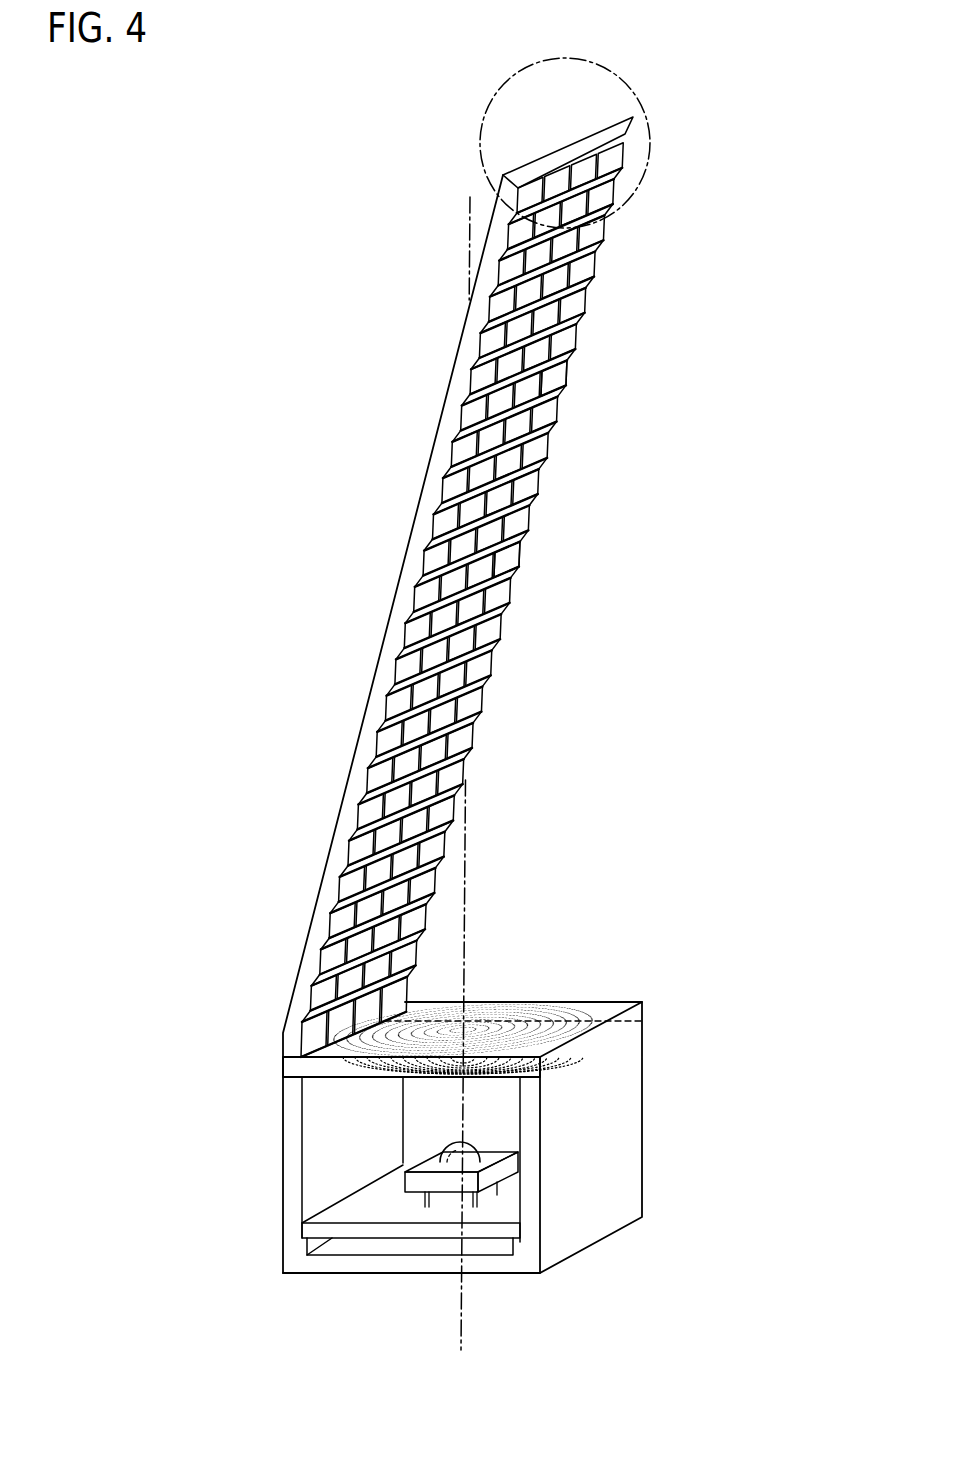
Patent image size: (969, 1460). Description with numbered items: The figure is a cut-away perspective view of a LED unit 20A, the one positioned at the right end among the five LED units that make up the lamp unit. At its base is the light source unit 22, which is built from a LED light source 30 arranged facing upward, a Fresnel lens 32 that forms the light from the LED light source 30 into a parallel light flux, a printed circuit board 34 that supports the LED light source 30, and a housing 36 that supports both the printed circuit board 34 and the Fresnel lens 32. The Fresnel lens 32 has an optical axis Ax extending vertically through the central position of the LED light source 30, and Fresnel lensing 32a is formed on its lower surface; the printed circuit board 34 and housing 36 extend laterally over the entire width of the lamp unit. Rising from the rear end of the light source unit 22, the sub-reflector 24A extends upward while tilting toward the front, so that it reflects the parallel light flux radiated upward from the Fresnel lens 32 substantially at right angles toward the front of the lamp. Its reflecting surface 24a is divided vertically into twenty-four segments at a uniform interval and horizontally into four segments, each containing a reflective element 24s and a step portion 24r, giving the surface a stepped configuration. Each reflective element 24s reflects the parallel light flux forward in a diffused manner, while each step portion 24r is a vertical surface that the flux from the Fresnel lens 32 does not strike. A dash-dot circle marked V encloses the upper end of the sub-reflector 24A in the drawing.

The LED unit 20A is at (291, 312).
The light source unit 22 is at (281, 1121).
The sub-reflector 24A is at (396, 561).
The reflecting surface 24a is at (519, 548).
The step portion 24r is at (560, 368).
The reflective element 24s is at (568, 350).
The LED light source 30 is at (450, 1147).
The Fresnel lens 32 is at (578, 1012).
The Fresnel lensing 32a is at (347, 1082).
The printed circuit board 34 is at (353, 1213).
The housing 36 is at (602, 1147).
The optical axis Ax is at (465, 863).
The detail region V is at (483, 117).